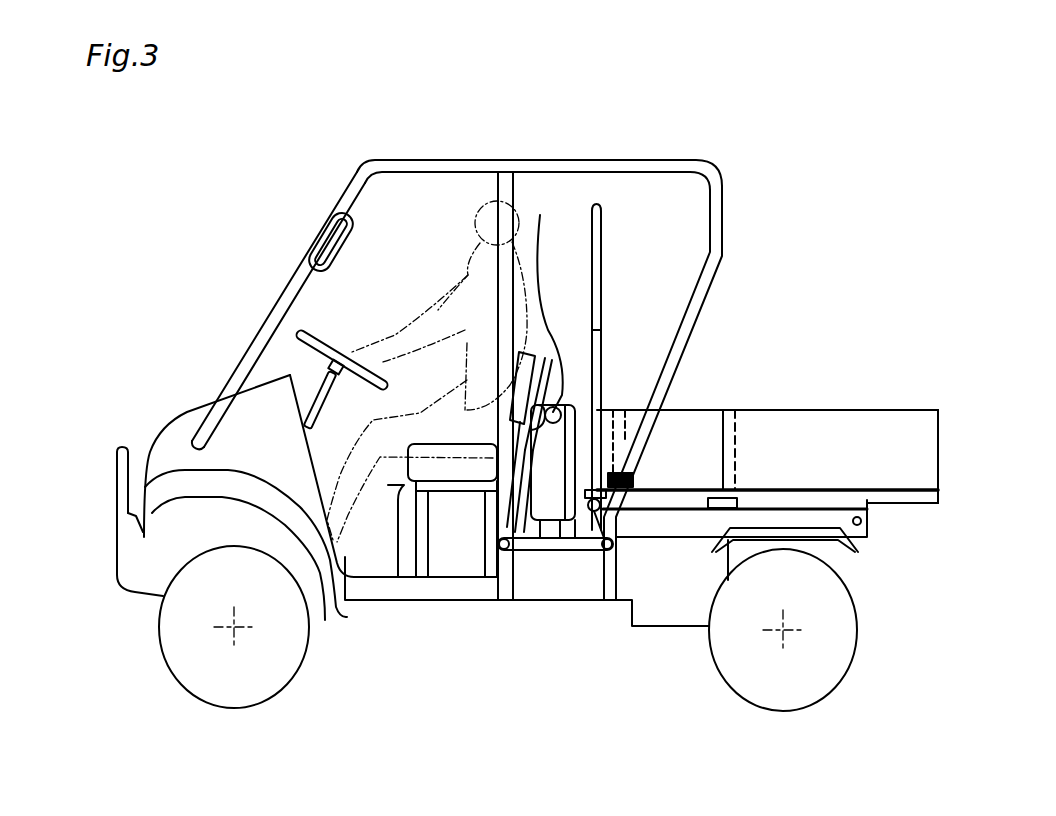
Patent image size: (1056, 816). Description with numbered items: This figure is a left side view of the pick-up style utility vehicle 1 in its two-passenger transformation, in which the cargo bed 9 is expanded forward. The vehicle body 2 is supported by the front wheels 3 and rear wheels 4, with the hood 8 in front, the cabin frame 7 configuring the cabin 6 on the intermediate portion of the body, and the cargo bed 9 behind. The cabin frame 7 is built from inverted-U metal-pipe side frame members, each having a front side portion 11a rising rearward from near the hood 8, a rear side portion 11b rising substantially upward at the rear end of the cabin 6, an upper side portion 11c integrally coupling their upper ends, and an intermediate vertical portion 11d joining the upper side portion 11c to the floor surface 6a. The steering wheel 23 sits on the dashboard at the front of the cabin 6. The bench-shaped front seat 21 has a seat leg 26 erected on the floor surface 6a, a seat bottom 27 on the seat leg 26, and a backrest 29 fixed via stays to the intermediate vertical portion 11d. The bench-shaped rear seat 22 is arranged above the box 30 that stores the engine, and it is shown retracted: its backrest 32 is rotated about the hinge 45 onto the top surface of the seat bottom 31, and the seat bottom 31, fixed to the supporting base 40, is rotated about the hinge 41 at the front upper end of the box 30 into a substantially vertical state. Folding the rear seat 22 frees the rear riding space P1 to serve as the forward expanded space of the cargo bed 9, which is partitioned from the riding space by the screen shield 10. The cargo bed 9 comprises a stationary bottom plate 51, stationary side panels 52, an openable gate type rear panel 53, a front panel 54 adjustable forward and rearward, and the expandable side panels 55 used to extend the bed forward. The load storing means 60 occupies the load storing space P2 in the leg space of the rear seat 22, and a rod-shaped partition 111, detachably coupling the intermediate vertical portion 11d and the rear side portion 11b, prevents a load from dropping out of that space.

The pick-up style utility vehicle 1 is at (564, 436).
The vehicle body 2 is at (357, 603).
The front wheels 3 is at (190, 668).
The rear wheels 4 is at (837, 673).
The cabin 6 is at (350, 311).
The floor surface 6a is at (470, 580).
The cabin frame 7 is at (321, 203).
The hood 8 is at (183, 425).
The cargo bed 9 is at (812, 454).
The screen shield 10 is at (598, 210).
The front side portion 11a is at (288, 282).
The rear side portion 11b is at (720, 233).
The upper side portion 11c is at (510, 160).
The intermediate vertical portion 11d is at (474, 234).
The bench-shaped front seat 21 is at (498, 509).
The bench-shaped rear seat 22 is at (528, 560).
The steering wheel 23 is at (300, 335).
The seat leg 26 is at (413, 579).
The seat bottom 27 is at (417, 447).
The backrest 29 is at (540, 215).
The box 30 is at (653, 598).
The seat bottom 31 is at (573, 427).
The backrest 32 is at (519, 556).
The supporting base 40 is at (564, 561).
The hinge 41 is at (605, 540).
The hinge 45 is at (572, 368).
The stationary bottom plate 51 is at (922, 497).
The stationary side panels 52 is at (847, 447).
The gate type rear panel 53 is at (940, 447).
The front panel 54 is at (627, 407).
The expandable side panels 55 is at (701, 424).
The load storing means 60 is at (582, 550).
The partition 111 is at (577, 548).
The rear riding space P1 is at (615, 322).
The load storing space P2 is at (550, 550).